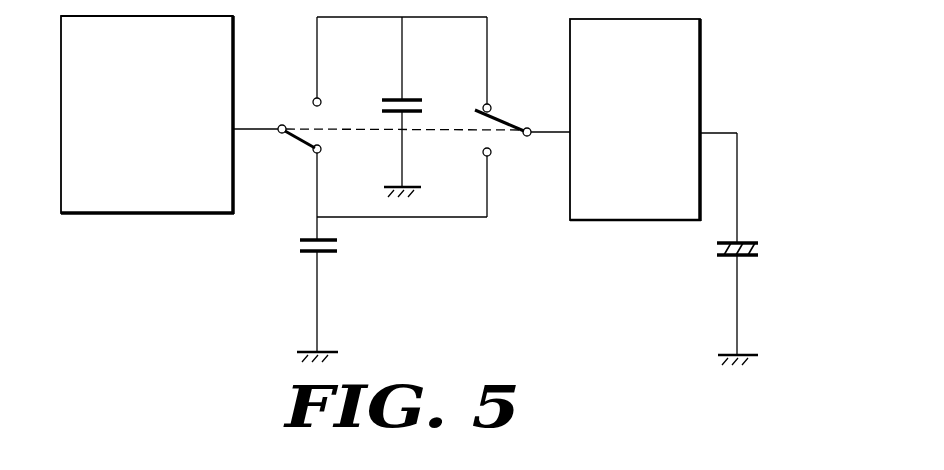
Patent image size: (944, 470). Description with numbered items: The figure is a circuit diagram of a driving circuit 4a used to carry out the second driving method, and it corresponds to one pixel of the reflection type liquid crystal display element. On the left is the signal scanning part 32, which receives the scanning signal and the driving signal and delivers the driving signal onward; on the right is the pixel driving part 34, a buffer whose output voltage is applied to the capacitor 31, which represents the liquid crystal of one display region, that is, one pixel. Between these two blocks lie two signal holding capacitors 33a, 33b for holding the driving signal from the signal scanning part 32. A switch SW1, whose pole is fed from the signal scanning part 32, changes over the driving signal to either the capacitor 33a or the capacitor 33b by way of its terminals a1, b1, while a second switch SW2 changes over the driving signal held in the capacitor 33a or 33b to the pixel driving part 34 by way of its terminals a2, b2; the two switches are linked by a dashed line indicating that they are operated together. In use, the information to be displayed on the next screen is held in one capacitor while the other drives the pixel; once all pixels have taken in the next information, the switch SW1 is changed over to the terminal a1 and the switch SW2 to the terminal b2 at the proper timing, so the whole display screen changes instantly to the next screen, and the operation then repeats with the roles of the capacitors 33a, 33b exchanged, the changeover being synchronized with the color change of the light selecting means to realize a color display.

The driving circuit 4a is at (122, 228).
The signal scanning part 32 is at (207, 207).
The pixel driving part 34 is at (700, 48).
The capacitor 31 is at (742, 240).
The signal holding capacitor 33a is at (320, 252).
The signal holding capacitor 33b is at (410, 97).
The switch SW1 is at (302, 137).
The switch SW2 is at (498, 113).
The terminal a1 is at (320, 99).
The terminal b1 is at (320, 152).
The terminal a2 is at (491, 104).
The terminal b2 is at (486, 157).